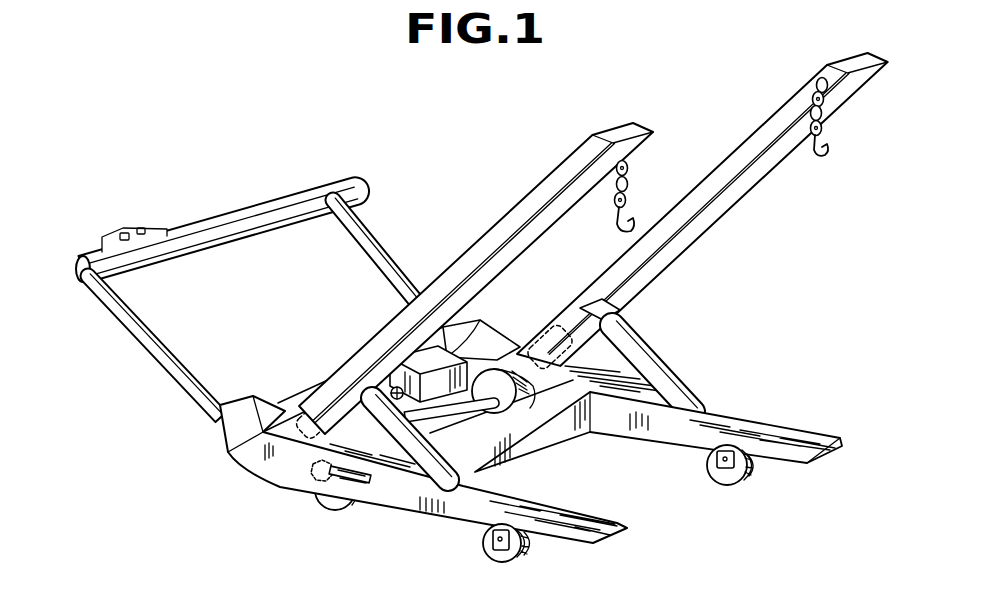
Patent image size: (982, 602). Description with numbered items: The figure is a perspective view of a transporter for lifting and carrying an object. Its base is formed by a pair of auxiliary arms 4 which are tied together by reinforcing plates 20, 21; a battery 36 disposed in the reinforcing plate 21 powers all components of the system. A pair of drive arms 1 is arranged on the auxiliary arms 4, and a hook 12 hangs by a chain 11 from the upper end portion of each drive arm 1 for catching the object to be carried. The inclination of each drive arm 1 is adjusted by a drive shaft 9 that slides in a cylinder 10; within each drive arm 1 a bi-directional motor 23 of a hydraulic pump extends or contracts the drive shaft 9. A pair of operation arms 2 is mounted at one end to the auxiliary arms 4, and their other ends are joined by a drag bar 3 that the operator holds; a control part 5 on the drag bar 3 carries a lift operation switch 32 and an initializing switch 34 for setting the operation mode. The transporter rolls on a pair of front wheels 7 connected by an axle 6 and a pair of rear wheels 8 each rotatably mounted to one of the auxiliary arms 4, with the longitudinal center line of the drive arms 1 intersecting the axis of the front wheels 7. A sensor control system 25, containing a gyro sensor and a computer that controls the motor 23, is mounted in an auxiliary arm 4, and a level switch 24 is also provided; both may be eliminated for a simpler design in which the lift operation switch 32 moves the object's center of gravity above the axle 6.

The drive arm 1 is at (530, 200).
The operation arm 2 is at (178, 378).
The drag bar 3 is at (258, 210).
The auxiliary arm 4 is at (283, 470).
The control part 5 is at (134, 232).
The axle 6 is at (480, 453).
The front wheel 7 is at (316, 506).
The rear wheel 8 is at (487, 537).
The drive shaft 9 is at (618, 316).
The cylinder 10 is at (660, 368).
The chain 11 is at (632, 182).
The hook 12 is at (814, 160).
The reinforcing plate 20 is at (483, 470).
The reinforcing plate 21 is at (400, 268).
The bi-directional motor 23 is at (545, 335).
The level switch 24 is at (373, 490).
The sensor control system 25 is at (311, 470).
The lift operation switch 32 is at (148, 231).
The initializing switch 34 is at (117, 232).
The battery 36 is at (394, 388).